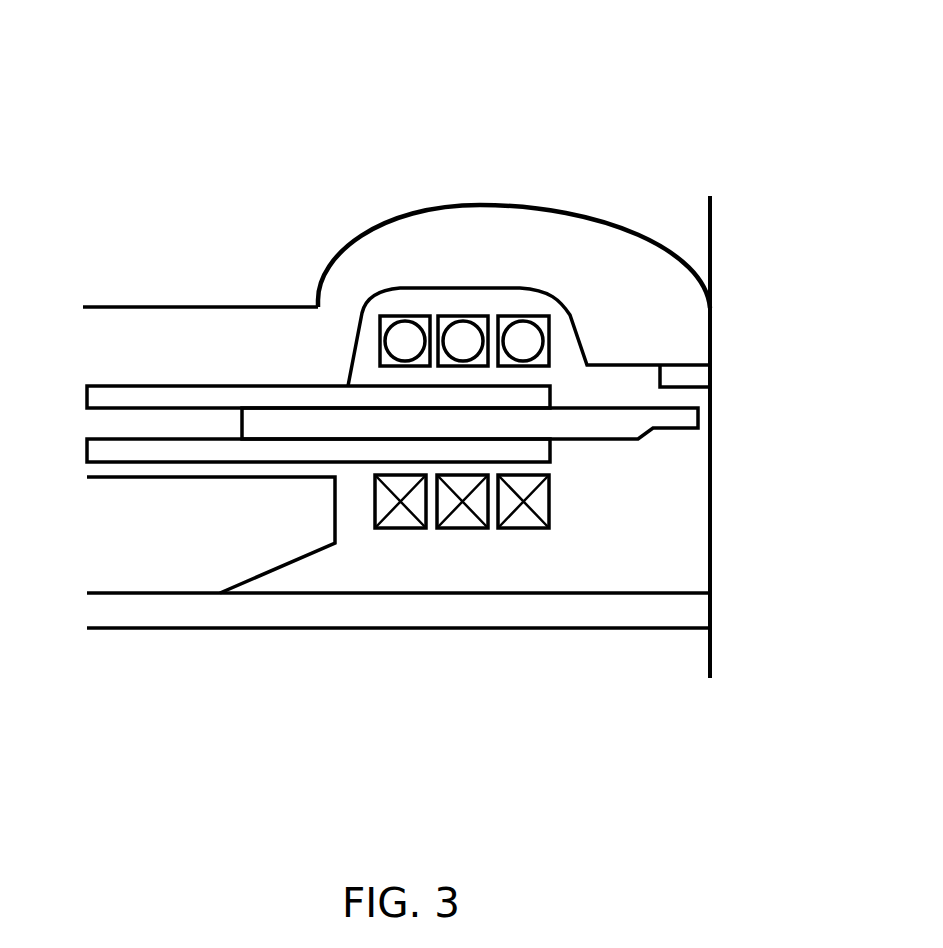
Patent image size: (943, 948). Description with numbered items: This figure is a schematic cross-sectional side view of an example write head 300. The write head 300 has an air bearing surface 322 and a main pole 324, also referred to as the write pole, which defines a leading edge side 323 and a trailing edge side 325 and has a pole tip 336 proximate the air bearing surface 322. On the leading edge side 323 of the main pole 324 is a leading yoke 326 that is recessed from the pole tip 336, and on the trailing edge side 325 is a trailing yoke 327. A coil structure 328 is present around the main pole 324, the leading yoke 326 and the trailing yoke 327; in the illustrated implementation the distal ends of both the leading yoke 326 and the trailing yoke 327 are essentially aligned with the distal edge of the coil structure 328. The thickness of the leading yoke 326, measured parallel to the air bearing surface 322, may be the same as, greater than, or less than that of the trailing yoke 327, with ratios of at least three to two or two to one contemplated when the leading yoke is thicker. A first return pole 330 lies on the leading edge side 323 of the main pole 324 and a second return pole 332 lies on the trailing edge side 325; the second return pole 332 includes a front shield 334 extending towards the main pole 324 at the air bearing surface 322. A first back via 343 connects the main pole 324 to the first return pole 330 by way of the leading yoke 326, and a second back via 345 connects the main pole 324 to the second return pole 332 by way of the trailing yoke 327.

The write head 300 is at (162, 67).
The air bearing surface 322 is at (712, 461).
The leading edge side 323 is at (605, 693).
The main pole 324 is at (583, 442).
The trailing edge side 325 is at (606, 390).
The leading yoke 326 is at (367, 462).
The trailing yoke 327 is at (310, 386).
The coil structure 328 is at (457, 302).
The first return pole 330 is at (162, 623).
The second return pole 332 is at (227, 345).
The front shield 334 is at (680, 362).
The pole tip 336 is at (698, 412).
The first back via 343 is at (335, 507).
The second back via 345 is at (360, 318).